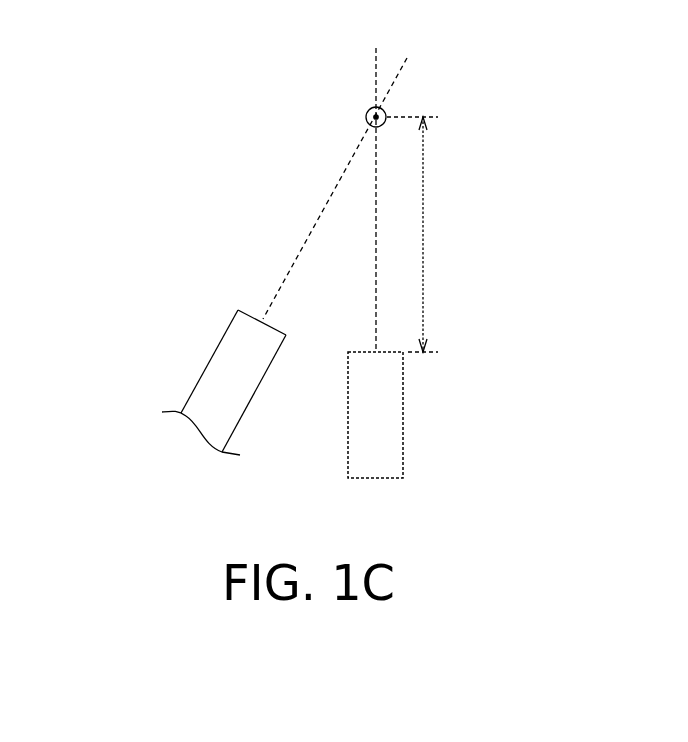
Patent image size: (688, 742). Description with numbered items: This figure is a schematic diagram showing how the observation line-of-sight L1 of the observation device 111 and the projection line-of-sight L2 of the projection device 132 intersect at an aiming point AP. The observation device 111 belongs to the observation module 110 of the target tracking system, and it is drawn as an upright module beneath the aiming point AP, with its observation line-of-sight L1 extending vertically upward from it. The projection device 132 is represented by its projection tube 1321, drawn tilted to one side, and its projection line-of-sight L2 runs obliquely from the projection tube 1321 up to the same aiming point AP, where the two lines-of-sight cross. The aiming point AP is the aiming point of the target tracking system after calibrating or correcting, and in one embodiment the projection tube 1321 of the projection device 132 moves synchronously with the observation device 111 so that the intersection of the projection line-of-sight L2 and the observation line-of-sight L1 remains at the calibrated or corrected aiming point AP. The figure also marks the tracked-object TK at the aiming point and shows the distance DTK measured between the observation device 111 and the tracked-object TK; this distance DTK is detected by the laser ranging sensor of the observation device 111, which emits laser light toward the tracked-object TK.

The observation line-of-sight L1 is at (376, 186).
The projection line-of-sight L2 is at (345, 174).
The aiming point AP is at (366, 117).
The tracked-object TK is at (383, 110).
The distance DTK is at (441, 234).
The observation device 111 is at (403, 413).
The observation module 110 is at (375, 415).
The projection tube 1321 is at (209, 362).
The projection device 132 is at (233, 381).